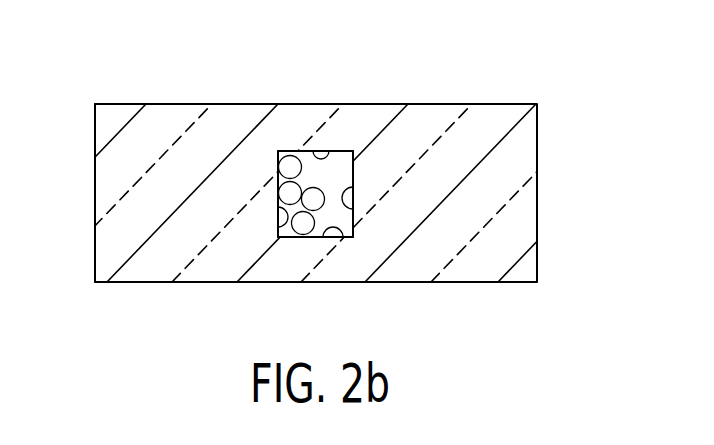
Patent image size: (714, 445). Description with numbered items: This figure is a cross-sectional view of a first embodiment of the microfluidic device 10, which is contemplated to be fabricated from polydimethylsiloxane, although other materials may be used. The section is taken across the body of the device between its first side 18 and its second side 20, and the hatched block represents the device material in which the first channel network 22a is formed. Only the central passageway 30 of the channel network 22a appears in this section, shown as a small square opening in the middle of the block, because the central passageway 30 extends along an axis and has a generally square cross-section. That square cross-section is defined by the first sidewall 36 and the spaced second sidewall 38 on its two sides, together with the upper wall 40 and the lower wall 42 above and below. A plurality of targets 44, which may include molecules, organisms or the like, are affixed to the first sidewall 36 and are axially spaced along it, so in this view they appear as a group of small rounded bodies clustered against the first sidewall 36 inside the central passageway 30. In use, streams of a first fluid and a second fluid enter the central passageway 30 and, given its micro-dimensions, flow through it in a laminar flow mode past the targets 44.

The microfluidic device 10 is at (566, 303).
The first side 18 is at (95, 168).
The second side 20 is at (538, 200).
The first channel network 22a is at (346, 143).
The central passageway 30 is at (335, 212).
The first sidewall 36 is at (278, 209).
The second sidewall 38 is at (353, 190).
The upper wall 40 is at (314, 151).
The lower wall 42 is at (342, 237).
The targets 44 is at (279, 166).